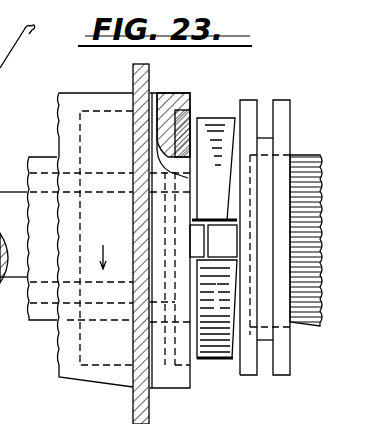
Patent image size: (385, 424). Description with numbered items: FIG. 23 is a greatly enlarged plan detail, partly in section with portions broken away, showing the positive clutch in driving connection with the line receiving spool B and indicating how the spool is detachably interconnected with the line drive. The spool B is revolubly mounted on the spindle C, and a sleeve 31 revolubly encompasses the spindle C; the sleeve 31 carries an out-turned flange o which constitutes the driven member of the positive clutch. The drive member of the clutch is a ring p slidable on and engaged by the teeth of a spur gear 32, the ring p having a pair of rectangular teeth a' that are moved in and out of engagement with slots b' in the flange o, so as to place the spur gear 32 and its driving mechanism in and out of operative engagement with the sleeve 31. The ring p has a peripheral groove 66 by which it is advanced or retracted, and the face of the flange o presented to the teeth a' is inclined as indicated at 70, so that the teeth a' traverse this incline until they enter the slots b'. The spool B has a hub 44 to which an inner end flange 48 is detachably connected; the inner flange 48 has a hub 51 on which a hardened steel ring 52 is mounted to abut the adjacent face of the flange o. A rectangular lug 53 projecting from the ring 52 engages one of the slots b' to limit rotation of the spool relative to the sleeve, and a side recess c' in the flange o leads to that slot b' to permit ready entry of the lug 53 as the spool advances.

The hub 44 is at (79, 93).
The sleeve 31 is at (34, 153).
The inner end flange 48 is at (133, 401).
The hub 51 is at (172, 96).
The hardened steel ring 52 is at (192, 120).
The rectangular lug 53 is at (194, 233).
The incline 70 is at (233, 352).
The peripheral groove 66 is at (264, 368).
The spur gear 32 is at (303, 155).
The out-turned flange o is at (218, 118).
The ring p is at (282, 99).
The rectangular teeth a' is at (197, 241).
The slots b' is at (213, 205).
The side recess c' is at (197, 309).
The spindle C is at (8, 190).
The line receiving spool B is at (54, 348).